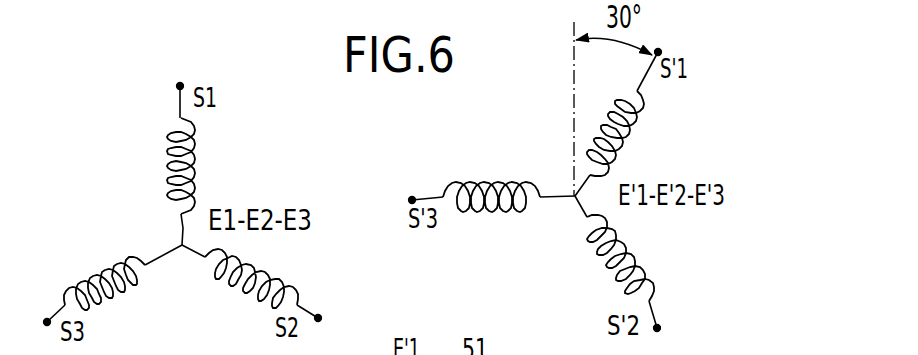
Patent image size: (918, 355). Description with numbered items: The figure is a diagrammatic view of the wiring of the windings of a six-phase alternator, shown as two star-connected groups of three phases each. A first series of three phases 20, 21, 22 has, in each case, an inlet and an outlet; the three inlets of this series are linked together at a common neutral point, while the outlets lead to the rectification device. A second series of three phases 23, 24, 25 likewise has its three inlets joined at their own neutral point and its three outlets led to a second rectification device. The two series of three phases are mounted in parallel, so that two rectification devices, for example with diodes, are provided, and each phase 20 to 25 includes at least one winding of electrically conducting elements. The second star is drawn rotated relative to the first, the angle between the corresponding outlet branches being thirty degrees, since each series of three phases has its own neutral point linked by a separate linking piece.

The phase 20 is at (212, 170).
The phase 21 is at (268, 265).
The phase 22 is at (97, 269).
The phase 23 is at (630, 140).
The phase 24 is at (636, 250).
The phase 25 is at (510, 176).